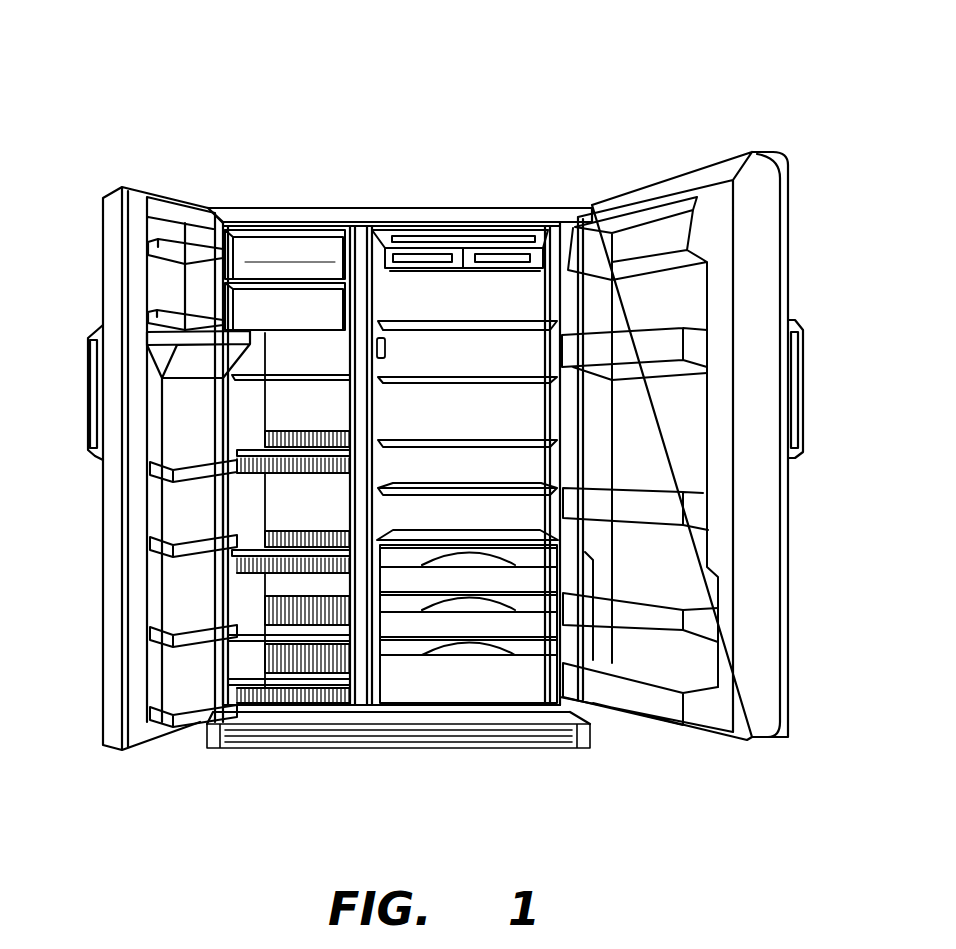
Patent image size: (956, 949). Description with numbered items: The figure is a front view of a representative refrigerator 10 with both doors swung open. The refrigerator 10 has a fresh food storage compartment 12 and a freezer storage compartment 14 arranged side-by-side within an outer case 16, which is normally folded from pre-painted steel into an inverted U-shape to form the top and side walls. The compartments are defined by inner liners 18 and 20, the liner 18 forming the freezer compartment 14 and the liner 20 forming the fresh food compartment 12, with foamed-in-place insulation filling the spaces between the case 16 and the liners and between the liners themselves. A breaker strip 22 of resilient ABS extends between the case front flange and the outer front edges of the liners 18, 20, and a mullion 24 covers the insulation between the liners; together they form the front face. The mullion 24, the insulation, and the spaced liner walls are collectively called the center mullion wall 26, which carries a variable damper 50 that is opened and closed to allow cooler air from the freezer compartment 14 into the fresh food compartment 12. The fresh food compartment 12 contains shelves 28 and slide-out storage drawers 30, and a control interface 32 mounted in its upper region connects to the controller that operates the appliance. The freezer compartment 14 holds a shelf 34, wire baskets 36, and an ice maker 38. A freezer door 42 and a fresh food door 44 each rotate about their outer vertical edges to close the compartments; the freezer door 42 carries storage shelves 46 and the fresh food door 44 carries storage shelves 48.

The refrigerator 10 is at (562, 95).
The fresh food storage compartment 12 is at (547, 224).
The freezer storage compartment 14 is at (326, 256).
The outer case 16 is at (427, 204).
The inner liner 18 is at (485, 232).
The inner liner 20 is at (278, 240).
The breaker strip 22 is at (527, 212).
The mullion 24 is at (360, 703).
The center mullion wall 26 is at (378, 410).
The shelves 28 is at (480, 377).
The slide-out storage drawers 30 is at (440, 582).
The control interface 32 is at (508, 255).
The shelf 34 is at (280, 383).
The wire baskets 36 is at (253, 552).
The ice maker 38 is at (287, 310).
The freezer door 42 is at (163, 194).
The fresh food door 44 is at (788, 230).
The storage shelves 46 is at (163, 725).
The storage shelves 48 is at (637, 503).
The damper 50 is at (385, 356).